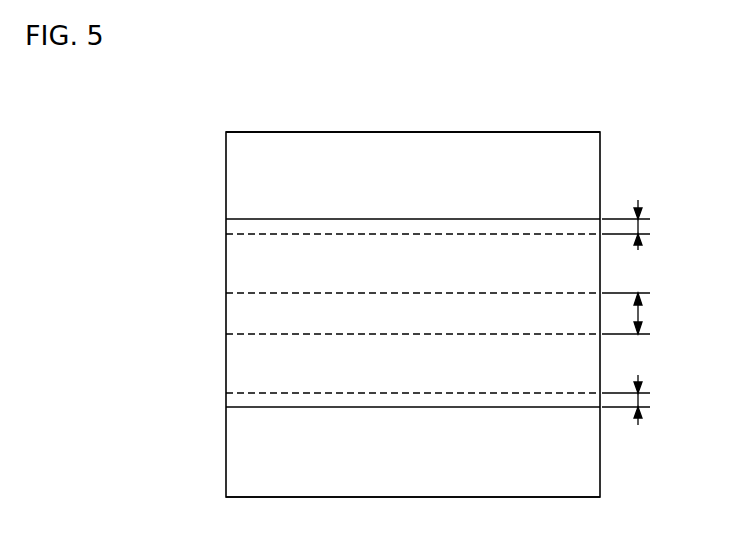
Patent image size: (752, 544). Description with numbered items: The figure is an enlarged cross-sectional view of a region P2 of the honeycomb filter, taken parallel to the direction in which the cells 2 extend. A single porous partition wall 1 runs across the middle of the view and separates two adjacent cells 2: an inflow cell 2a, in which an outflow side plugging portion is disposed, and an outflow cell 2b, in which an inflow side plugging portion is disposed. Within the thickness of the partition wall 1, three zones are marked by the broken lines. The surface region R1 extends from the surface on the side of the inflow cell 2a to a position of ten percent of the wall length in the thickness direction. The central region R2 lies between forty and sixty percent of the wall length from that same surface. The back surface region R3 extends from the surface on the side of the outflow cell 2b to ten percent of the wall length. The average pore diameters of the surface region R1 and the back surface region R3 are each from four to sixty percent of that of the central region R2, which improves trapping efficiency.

The cells 2 is at (413, 295).
The outflow cell 2b is at (329, 155).
The inflow cell 2a is at (440, 467).
The region P2 is at (498, 132).
The partition wall 1 is at (555, 217).
The back surface region R3 is at (642, 225).
The central region R2 is at (642, 313).
The surface region R1 is at (642, 400).